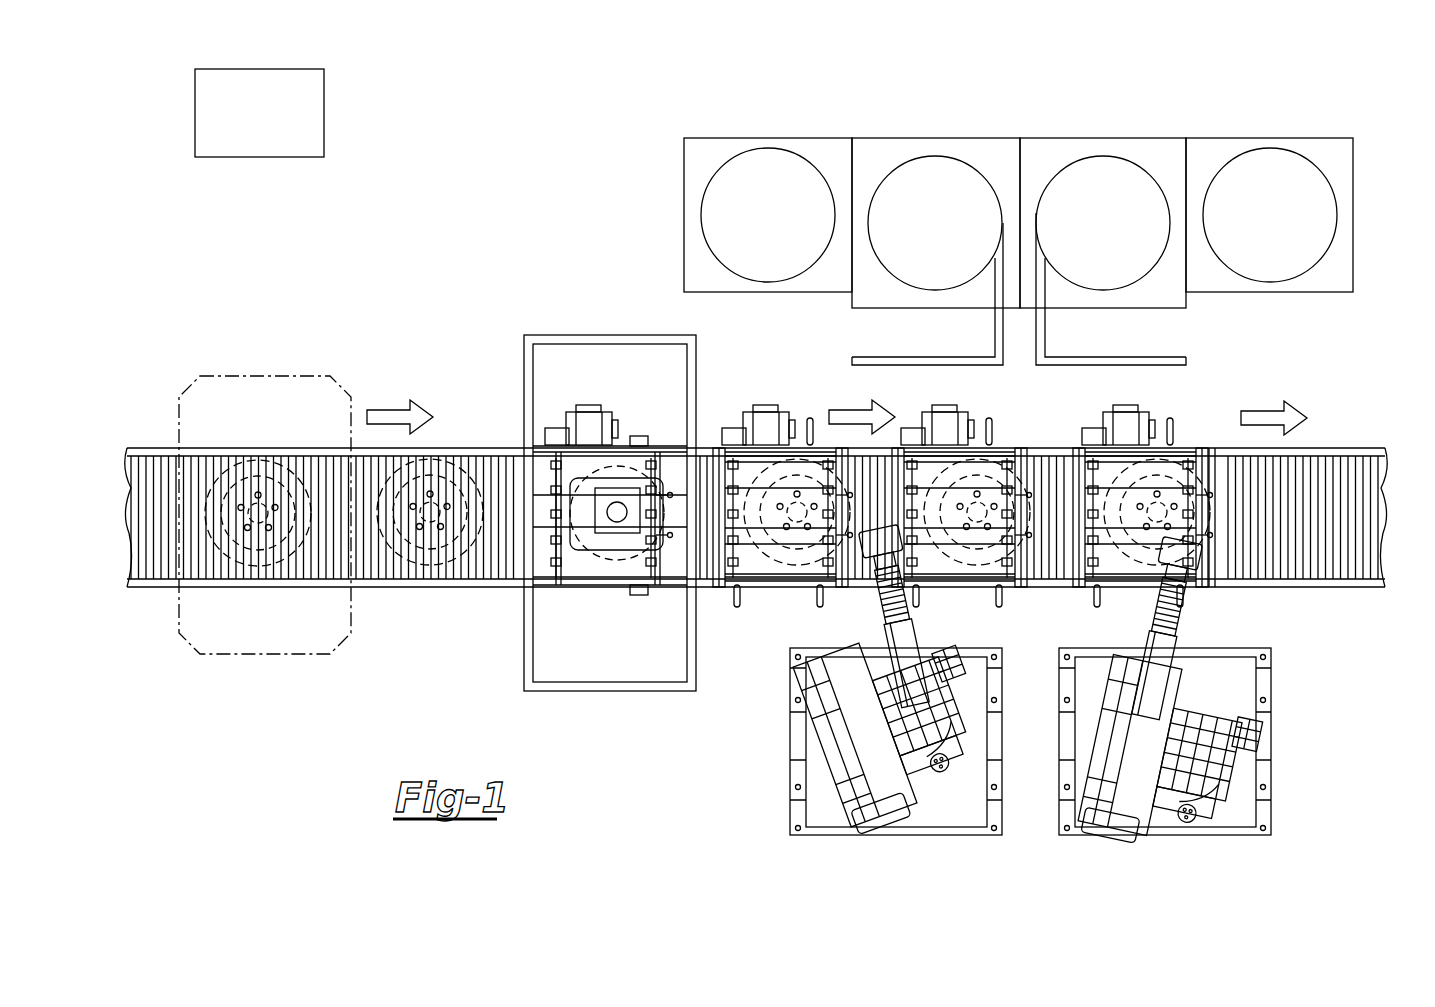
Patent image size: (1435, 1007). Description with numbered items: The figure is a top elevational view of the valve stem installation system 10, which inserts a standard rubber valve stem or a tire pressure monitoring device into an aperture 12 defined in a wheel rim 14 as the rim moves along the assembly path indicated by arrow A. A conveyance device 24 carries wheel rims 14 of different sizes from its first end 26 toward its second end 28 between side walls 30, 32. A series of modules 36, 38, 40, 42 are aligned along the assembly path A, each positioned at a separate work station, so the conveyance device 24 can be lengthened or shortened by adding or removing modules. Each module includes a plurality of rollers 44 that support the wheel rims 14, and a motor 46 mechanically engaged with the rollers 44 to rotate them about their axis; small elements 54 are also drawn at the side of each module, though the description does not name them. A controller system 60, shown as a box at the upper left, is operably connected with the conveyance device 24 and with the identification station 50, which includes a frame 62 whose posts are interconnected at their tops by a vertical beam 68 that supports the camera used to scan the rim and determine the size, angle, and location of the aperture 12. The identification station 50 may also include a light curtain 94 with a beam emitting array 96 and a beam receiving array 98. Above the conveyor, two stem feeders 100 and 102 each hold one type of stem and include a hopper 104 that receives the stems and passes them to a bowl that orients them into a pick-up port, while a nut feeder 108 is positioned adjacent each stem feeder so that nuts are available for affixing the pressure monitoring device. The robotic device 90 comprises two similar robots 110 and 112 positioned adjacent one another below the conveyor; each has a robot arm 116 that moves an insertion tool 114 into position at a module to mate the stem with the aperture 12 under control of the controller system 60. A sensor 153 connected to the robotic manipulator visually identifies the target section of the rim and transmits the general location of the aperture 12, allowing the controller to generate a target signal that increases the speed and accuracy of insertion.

The valve stem installation system 10 is at (566, 172).
The aperture 12 is at (280, 470).
The wheel rim 14 is at (235, 463).
The conveyance device 24 is at (358, 566).
The first end 26 is at (142, 450).
The second end 28 is at (1378, 450).
The side wall 30 is at (468, 586).
The side wall 32 is at (497, 450).
The module 36 is at (607, 582).
The module 38 is at (787, 586).
The module 40 is at (1005, 452).
The module 42 is at (1167, 452).
The rollers 44 is at (735, 462).
The motor 46 is at (602, 432).
The identification station 50 is at (612, 518).
The sensor 54 is at (671, 540).
The controller system 60 is at (338, 108).
The frame 62 is at (660, 692).
The vertical beam 68 is at (580, 336).
The robotic device 90 is at (1030, 704).
The light curtain 94 is at (636, 360).
The beam emitting array 96 is at (641, 436).
The beam receiving array 98 is at (640, 596).
The stem feeder 100 is at (958, 178).
The stem feeder 102 is at (1122, 178).
The hopper 104 is at (900, 177).
The nut feeder 108 is at (770, 160).
The robot 110 is at (852, 805).
The robot 112 is at (1147, 822).
The insertion tool 114 is at (960, 547).
The robot arm 116 is at (922, 645).
The sensor 153 is at (1089, 44).
The assembly path A is at (378, 410).